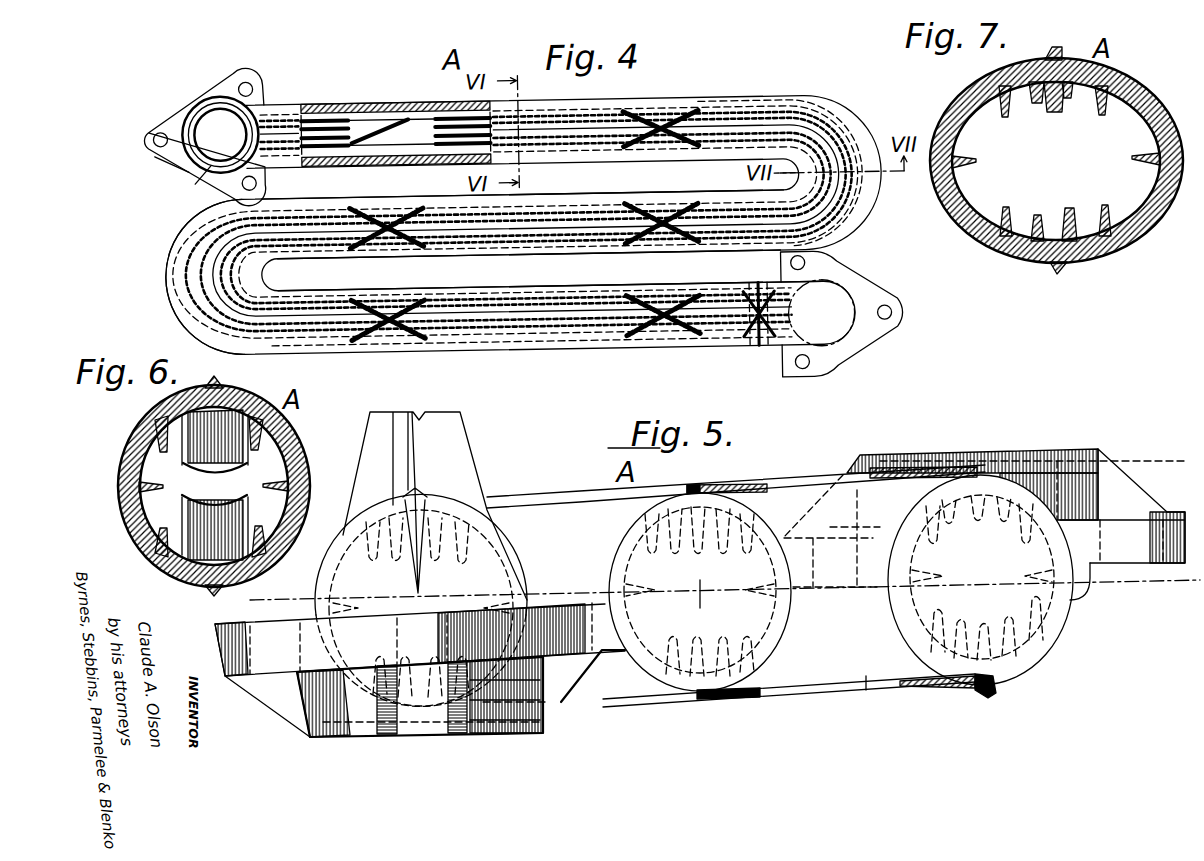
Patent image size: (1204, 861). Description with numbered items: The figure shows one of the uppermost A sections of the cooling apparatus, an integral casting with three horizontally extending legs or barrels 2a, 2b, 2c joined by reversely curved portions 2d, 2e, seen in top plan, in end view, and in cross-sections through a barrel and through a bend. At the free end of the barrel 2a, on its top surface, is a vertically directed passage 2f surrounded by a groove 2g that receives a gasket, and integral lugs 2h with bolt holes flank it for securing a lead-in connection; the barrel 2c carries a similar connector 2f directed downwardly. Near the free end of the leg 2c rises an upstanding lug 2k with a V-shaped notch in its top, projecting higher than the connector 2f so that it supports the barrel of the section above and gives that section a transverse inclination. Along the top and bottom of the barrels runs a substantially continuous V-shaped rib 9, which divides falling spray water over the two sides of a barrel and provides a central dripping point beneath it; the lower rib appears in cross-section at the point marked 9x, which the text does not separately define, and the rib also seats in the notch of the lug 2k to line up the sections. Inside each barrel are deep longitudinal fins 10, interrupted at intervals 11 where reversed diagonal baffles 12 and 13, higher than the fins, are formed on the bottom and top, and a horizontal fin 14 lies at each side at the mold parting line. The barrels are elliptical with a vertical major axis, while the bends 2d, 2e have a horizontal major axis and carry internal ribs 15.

In FIG. 4, the barrel 2a is at (346, 101).
In FIG. 5, the barrel 2a is at (1083, 603).
In FIG. 4, the barrel 2b is at (364, 196).
In FIG. 5, the barrel 2b is at (613, 578).
In FIG. 4, the barrel 2c is at (382, 289).
In FIG. 5, the barrel 2c is at (350, 600).
In FIG. 4, the reversely curved portion 2d is at (852, 118).
In FIG. 5, the reversely curved portion 2d is at (617, 695).
In FIG. 7, the reversely curved portion 2d is at (1140, 90).
In FIG. 4, the reversely curved portion 2e is at (167, 273).
In FIG. 5, the reversely curved portion 2e is at (867, 688).
In FIG. 4, the vertically directed passage 2f is at (215, 113).
In FIG. 5, the vertically directed passage 2f is at (1052, 450).
In FIG. 4, the groove 2g is at (204, 161).
In FIG. 5, the groove 2g is at (880, 455).
In FIG. 4, the lugs 2h is at (182, 154).
In FIG. 5, the lugs 2h is at (232, 644).
In FIG. 4, the upstanding lug 2k is at (753, 328).
In FIG. 5, the upstanding lug 2k is at (462, 452).
In FIG. 4, the V-shaped rib 9 is at (620, 133).
In FIG. 5, the V-shaped rib 9 is at (788, 486).
In FIG. 6, the V-shaped rib 9 is at (212, 383).
In FIG. 7, the V-shaped rib 9 is at (1050, 55).
In FIG. 6, the tube outlet 9x is at (219, 587).
In FIG. 4, the fins 10 is at (327, 136).
In FIG. 5, the fins 10 is at (676, 543).
In FIG. 6, the fins 10 is at (274, 433).
In FIG. 4, the interruption 11 is at (425, 122).
In FIG. 4, the diagonal fin 12 is at (652, 117).
In FIG. 6, the diagonal fin 12 is at (215, 441).
In FIG. 4, the diagonal fin 13 is at (390, 125).
In FIG. 6, the diagonal fin 13 is at (215, 527).
In FIG. 4, the internal horizontal fin 14 is at (322, 113).
In FIG. 5, the internal horizontal fin 14 is at (634, 606).
In FIG. 6, the internal horizontal fin 14 is at (153, 488).
In FIG. 7, the internal horizontal fin 14 is at (977, 163).
In FIG. 4, the internal ribs 15 is at (870, 211).
In FIG. 7, the internal ribs 15 is at (1042, 100).